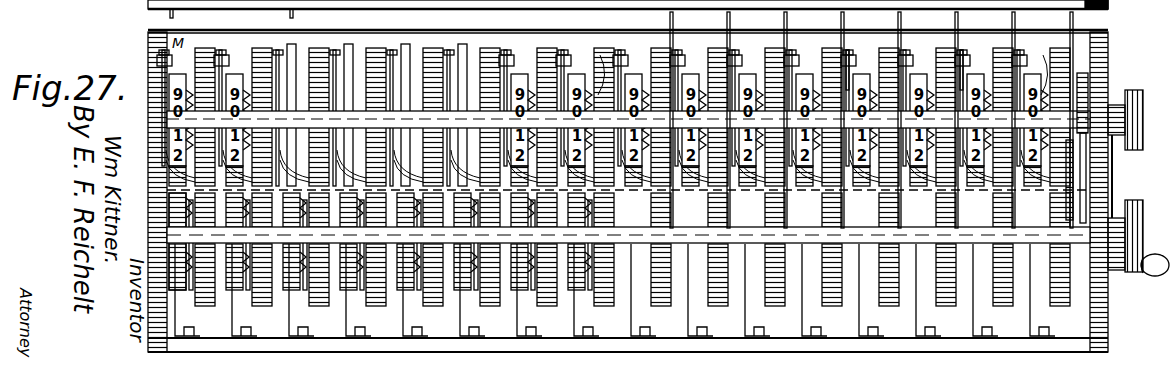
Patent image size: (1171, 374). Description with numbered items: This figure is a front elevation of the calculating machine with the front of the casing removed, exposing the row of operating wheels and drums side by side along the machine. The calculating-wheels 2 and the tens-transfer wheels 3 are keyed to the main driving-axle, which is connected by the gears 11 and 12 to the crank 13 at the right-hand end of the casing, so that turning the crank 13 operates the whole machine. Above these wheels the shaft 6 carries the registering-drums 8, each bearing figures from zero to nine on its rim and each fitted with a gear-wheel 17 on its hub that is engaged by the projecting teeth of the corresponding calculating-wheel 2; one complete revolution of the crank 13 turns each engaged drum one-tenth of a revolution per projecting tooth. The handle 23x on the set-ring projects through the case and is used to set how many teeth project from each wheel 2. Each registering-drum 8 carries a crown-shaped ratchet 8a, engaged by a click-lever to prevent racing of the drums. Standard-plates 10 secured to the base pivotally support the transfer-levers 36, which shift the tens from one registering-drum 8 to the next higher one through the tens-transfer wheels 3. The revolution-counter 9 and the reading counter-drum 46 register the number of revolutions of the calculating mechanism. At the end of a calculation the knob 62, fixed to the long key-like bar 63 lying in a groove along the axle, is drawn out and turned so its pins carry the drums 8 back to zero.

The calculating-wheel 2 is at (945, 57).
The tens-transfer wheel 3 is at (617, 9).
The shaft 6 is at (628, 117).
The registering-drum 8 is at (800, 87).
The crown-shaped ratchet 8a is at (821, 66).
The revolution-counter 9 is at (380, 259).
The standard-plate 10 is at (935, 318).
The gear 11 is at (1085, 83).
The gear 12 is at (1085, 190).
The crank 13 is at (1124, 276).
The gear-wheel 17 is at (963, 88).
The handle 23x is at (1070, 20).
The transfer-lever 36 is at (752, 64).
The reading counter-drum 46 is at (207, 286).
The knob 62 is at (668, 203).
The key-like bar 63 is at (1105, 160).